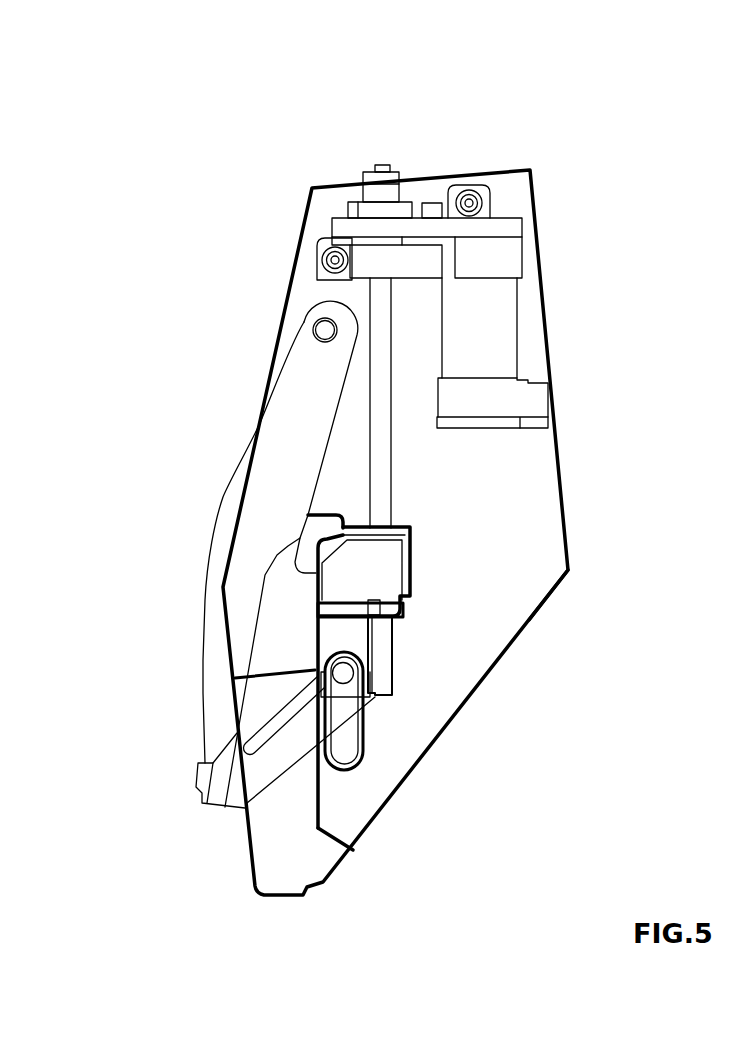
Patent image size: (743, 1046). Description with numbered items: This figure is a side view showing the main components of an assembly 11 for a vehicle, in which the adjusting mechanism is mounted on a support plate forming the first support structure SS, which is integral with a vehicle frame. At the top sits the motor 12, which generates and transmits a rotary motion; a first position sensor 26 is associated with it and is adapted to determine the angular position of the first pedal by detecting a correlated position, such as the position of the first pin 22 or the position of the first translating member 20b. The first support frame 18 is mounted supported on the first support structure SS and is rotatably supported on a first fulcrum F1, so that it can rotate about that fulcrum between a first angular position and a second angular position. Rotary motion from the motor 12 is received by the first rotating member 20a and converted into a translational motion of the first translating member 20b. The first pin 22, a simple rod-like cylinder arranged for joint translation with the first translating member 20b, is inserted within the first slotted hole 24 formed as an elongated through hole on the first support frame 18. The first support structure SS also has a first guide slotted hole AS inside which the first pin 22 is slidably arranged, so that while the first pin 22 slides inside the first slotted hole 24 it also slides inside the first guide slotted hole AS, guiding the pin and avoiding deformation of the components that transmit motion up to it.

The assembly 11 is at (280, 160).
The motor 12 is at (505, 193).
The first support frame 18 is at (267, 513).
The first rotating member 20a is at (392, 472).
The first translating member 20b is at (365, 576).
The first pin 22 is at (345, 673).
The first slotted hole 24 is at (265, 717).
The first position sensor 26 is at (392, 166).
The first fulcrum F1 is at (318, 329).
The first support structure SS is at (505, 660).
The first guide slotted hole AS is at (364, 738).